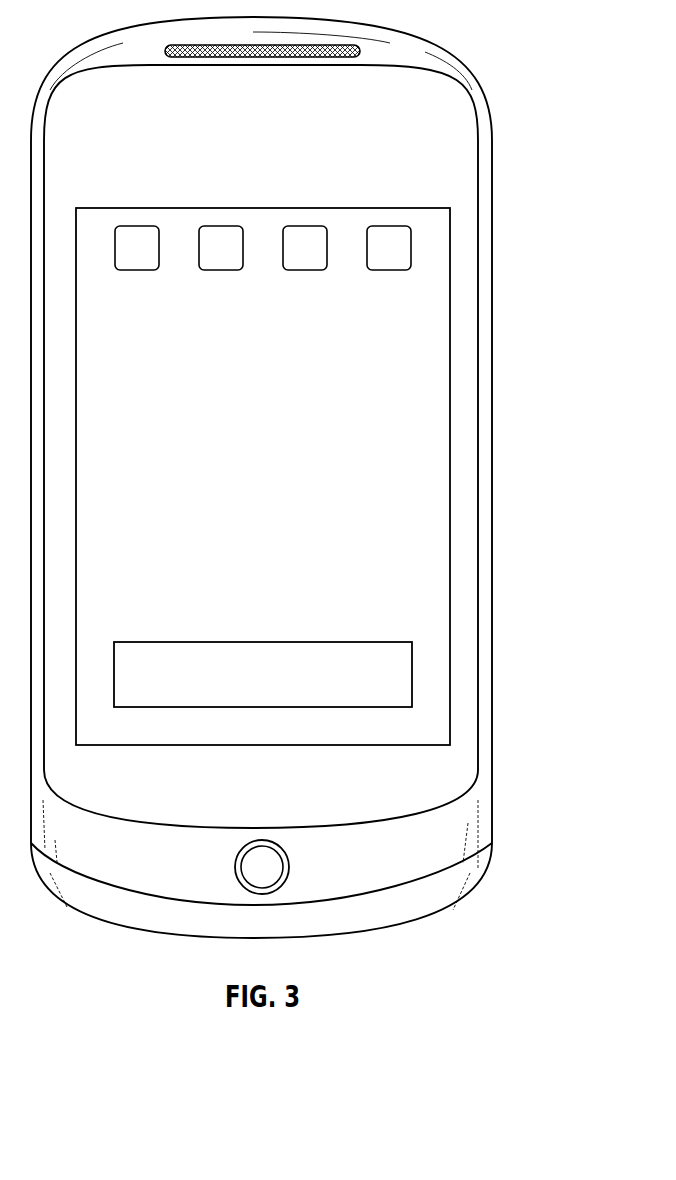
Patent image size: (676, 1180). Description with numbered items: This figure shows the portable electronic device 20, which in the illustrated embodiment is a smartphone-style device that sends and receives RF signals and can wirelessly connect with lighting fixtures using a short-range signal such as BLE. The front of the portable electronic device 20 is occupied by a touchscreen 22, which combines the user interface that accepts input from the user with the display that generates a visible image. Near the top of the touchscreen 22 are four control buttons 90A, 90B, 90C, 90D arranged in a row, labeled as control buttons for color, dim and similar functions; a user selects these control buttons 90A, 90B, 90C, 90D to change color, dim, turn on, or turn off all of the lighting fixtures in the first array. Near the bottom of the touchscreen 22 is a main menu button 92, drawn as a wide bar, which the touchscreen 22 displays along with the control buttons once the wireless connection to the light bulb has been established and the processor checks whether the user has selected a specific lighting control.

The portable electronic device 20 is at (493, 248).
The touchscreen 22 is at (415, 499).
The control button 90A is at (137, 272).
The control button 90B is at (223, 272).
The control button 90C is at (307, 272).
The control button 90D is at (390, 272).
The main menu button 92 is at (172, 640).